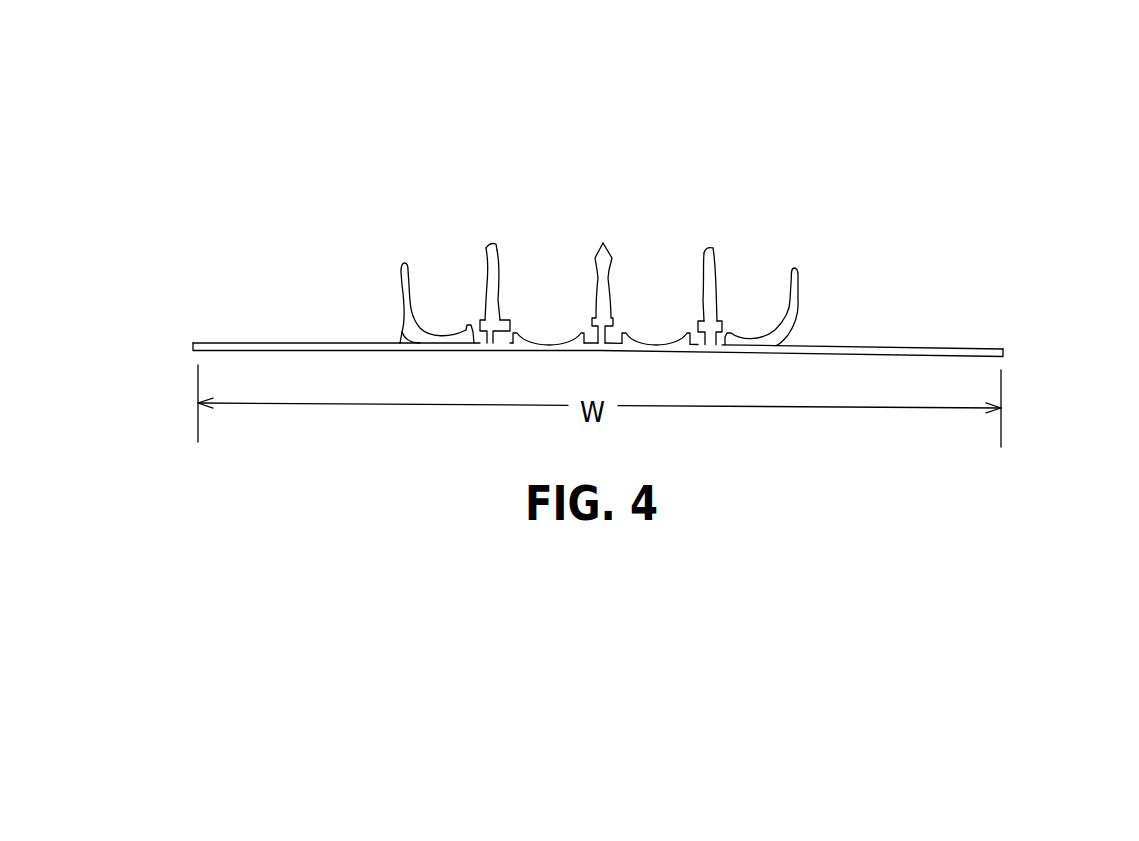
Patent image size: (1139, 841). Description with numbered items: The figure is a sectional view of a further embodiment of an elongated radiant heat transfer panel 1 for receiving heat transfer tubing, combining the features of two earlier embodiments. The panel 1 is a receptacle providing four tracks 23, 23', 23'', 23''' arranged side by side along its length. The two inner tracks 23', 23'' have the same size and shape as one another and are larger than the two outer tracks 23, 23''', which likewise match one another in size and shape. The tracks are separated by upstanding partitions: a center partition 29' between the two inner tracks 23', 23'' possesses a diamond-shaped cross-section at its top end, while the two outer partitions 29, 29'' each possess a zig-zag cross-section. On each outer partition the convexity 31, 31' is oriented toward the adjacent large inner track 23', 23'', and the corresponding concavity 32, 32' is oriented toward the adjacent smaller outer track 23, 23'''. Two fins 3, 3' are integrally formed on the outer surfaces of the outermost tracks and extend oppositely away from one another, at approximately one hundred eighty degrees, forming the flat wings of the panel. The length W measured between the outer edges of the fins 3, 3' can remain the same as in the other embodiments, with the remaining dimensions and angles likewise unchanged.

The heat transfer panel 1 is at (358, 271).
The fin 3 is at (257, 272).
The fin 3' is at (951, 278).
The outer track 23 is at (437, 245).
The inner track 23' is at (548, 246).
The inner track 23'' is at (656, 246).
The outer track 23''' is at (761, 247).
The outer partition 29 is at (495, 217).
The center partition 29' is at (632, 217).
The outer partition 29'' is at (705, 218).
The convexity 31 is at (459, 284).
The concavity 32 is at (528, 285).
The convexity 31' is at (670, 287).
The concavity 32' is at (739, 284).